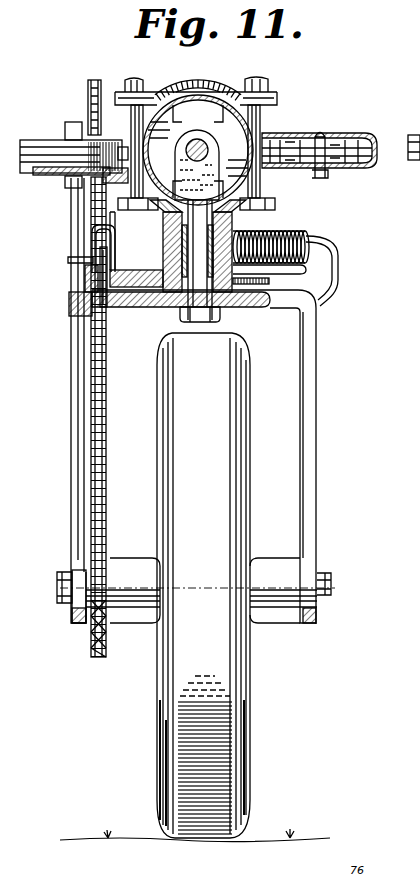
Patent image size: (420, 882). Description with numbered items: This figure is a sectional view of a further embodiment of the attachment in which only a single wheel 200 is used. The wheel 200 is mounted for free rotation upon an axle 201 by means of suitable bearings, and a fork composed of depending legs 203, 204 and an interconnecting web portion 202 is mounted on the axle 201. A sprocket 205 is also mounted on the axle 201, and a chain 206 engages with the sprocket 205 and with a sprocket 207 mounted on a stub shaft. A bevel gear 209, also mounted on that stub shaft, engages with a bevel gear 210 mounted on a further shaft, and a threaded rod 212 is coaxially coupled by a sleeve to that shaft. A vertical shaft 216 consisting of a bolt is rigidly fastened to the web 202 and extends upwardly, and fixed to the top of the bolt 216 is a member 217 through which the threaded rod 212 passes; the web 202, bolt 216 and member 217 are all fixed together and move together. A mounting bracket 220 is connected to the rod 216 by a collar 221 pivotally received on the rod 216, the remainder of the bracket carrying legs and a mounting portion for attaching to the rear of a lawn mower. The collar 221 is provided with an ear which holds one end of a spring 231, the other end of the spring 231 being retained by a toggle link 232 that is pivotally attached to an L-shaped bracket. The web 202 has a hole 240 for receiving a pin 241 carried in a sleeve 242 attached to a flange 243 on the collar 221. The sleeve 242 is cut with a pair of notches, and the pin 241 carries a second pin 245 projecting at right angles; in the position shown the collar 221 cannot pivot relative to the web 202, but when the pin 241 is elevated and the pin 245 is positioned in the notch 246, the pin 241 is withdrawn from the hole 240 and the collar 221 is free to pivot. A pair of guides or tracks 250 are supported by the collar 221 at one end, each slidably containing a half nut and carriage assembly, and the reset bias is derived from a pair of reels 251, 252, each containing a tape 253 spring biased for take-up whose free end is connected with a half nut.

The wheel 200 is at (242, 762).
The axle 201 is at (333, 577).
The web portion 202 is at (252, 312).
The depending leg 203 is at (318, 470).
The depending leg 204 is at (76, 460).
The sprocket 205 is at (108, 620).
The chain 206 is at (106, 472).
The sprocket 207 is at (88, 97).
The bevel gear 209 is at (116, 120).
The bevel gear 210 is at (205, 84).
The threaded rod 212 is at (188, 148).
The vertical shaft 216 is at (207, 237).
The member 217 is at (212, 163).
The mounting bracket 220 is at (170, 255).
The collar 221 is at (164, 237).
The spring 231 is at (300, 235).
The toggle link 232 is at (330, 290).
The hole 240 is at (110, 307).
The pin 241 is at (100, 288).
The sleeve 242 is at (113, 250).
The flange 243 is at (85, 280).
The second pin 245 is at (75, 258).
The notch 246 is at (106, 238).
The guide 250 is at (163, 98).
The reel 251 is at (45, 140).
The reel 252 is at (345, 133).
The tape 253 is at (138, 158).